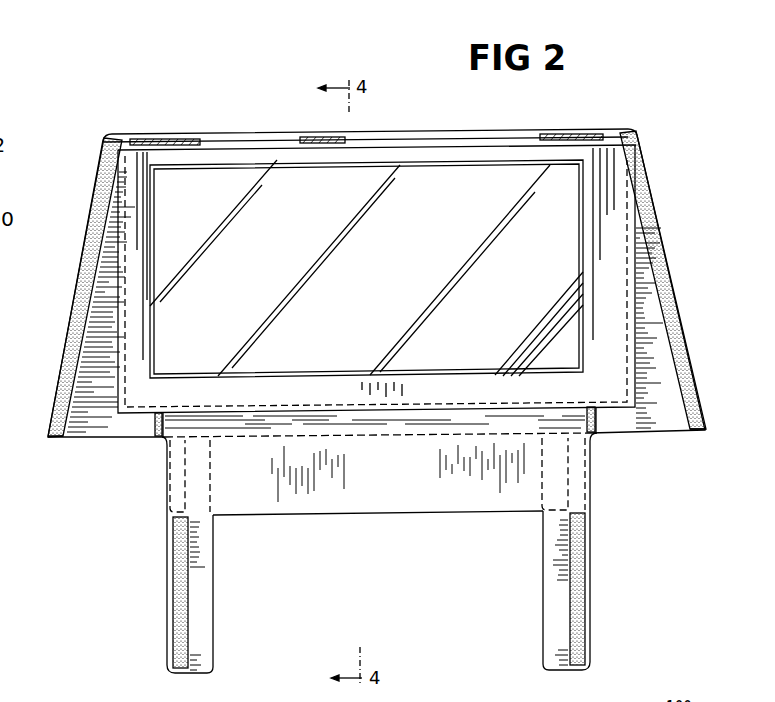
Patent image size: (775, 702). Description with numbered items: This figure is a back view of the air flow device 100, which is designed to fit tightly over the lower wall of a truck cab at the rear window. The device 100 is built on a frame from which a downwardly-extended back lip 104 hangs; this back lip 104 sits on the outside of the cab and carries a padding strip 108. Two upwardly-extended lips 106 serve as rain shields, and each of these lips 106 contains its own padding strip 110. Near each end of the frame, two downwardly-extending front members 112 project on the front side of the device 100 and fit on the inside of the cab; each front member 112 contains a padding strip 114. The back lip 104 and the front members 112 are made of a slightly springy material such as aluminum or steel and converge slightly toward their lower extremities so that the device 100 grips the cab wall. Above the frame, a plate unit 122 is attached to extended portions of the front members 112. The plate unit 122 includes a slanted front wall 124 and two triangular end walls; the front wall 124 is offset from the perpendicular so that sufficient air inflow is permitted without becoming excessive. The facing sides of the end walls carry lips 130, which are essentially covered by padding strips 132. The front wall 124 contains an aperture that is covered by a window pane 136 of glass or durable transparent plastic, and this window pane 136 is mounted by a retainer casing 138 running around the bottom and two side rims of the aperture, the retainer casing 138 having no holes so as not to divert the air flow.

The air flow device 100 is at (651, 176).
The back lip 104 is at (358, 507).
The upwardly-extended lips 106 is at (163, 439).
The padding strip 108 is at (168, 498).
The padding strip 110 is at (153, 430).
The front members 112 is at (205, 613).
The padding strip 114 is at (175, 638).
The plate unit 122 is at (648, 283).
The front wall 124 is at (663, 367).
The lips 130 is at (43, 438).
The padding strips 132 is at (53, 405).
The window pane 136 is at (427, 180).
The retainer casing 138 is at (140, 152).